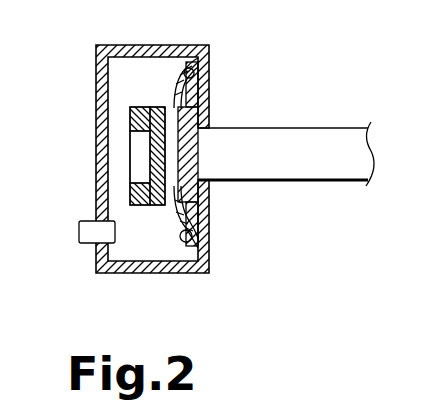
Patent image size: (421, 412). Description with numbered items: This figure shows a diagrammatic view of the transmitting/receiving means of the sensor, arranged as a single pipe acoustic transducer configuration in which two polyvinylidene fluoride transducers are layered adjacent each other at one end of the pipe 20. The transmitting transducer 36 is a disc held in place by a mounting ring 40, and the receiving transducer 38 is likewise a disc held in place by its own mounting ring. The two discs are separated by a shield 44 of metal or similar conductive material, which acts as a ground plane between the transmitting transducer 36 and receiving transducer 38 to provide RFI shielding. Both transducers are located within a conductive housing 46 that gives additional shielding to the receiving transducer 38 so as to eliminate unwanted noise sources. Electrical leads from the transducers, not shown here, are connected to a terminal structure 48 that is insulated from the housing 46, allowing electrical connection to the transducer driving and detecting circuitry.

The pipe 20 is at (318, 167).
The transmitting transducer 36 is at (131, 157).
The receiving transducer 38 is at (193, 140).
The mounting ring 40 is at (130, 112).
The shield 44 is at (221, 52).
The conductive housing 46 is at (96, 62).
The terminal structure 48 is at (79, 232).